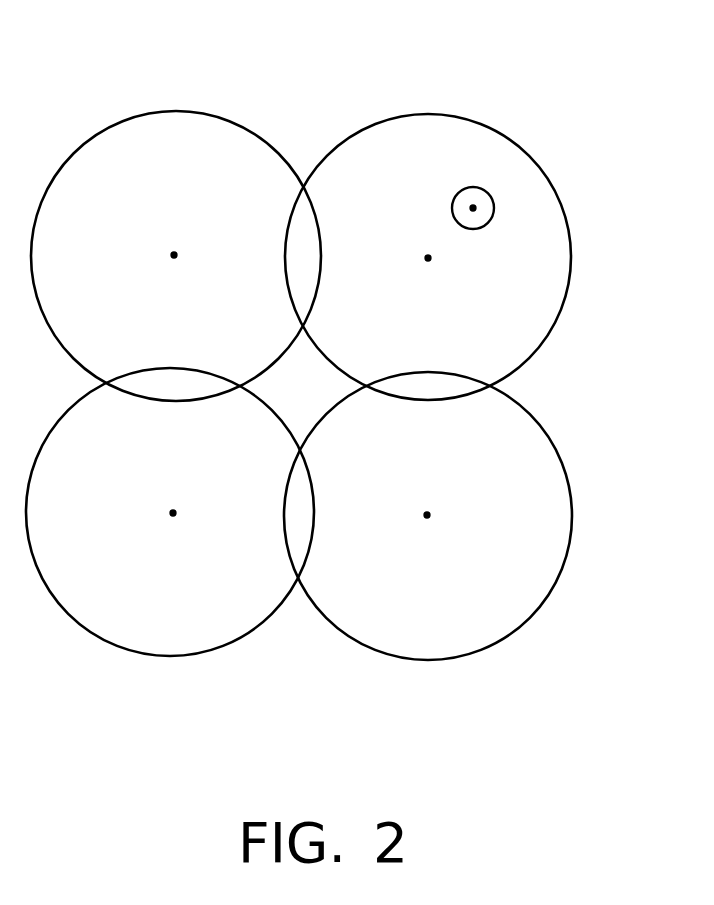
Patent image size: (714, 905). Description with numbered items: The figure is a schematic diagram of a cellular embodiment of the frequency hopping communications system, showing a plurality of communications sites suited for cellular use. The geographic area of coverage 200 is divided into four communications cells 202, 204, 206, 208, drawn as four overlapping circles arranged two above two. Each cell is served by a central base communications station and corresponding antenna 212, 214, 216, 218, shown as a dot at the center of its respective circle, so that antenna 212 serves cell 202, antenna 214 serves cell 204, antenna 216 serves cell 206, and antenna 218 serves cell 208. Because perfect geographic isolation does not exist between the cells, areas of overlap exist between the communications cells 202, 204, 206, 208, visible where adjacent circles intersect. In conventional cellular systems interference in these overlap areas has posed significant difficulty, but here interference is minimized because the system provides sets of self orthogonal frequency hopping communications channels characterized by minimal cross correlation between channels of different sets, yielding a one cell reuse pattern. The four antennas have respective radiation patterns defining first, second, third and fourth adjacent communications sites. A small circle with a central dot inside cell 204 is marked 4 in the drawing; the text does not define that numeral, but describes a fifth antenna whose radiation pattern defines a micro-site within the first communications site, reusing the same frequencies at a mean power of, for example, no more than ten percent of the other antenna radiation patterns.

The geographic area of coverage 200 is at (550, 39).
The communications cell 202 is at (548, 475).
The communications cell 204 is at (558, 232).
The communications cell 206 is at (182, 115).
The communications cell 208 is at (152, 645).
The central base communications station and corresponding antenna 212 is at (427, 515).
The central base communications station and corresponding antenna 214 is at (428, 258).
The central base communications station and corresponding antenna 216 is at (174, 255).
The central base communications station and corresponding antenna 218 is at (173, 513).
The small circular mark 4 is at (510, 190).